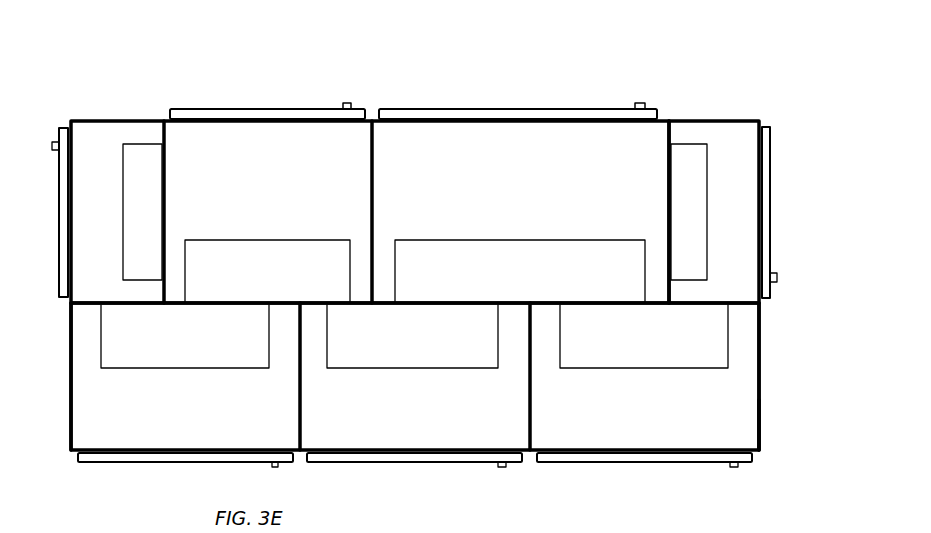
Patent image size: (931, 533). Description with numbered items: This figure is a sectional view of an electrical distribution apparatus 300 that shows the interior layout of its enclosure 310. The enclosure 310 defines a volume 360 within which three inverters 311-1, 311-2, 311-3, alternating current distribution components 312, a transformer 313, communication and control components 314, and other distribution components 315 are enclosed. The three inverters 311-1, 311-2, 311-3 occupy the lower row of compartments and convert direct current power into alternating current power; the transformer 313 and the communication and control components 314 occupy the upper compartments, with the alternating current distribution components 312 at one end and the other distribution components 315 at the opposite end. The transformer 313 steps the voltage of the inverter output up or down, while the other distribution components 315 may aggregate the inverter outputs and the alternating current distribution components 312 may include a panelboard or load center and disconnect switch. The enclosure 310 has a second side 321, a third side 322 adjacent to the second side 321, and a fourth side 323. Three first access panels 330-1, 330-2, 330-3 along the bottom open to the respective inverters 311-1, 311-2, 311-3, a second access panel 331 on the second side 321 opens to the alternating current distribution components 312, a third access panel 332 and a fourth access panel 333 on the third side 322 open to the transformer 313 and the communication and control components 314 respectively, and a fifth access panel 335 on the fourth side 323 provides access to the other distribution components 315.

The electrical distribution apparatus 300 is at (82, 90).
The enclosure 310 is at (713, 110).
The inverter 311-1 is at (193, 368).
The inverter 311-2 is at (417, 368).
The inverter 311-3 is at (612, 368).
The alternating current distribution components 312 is at (707, 212).
The transformer 313 is at (480, 240).
The communication and control components 314 is at (263, 240).
The other distribution components 315 is at (123, 228).
The second side 321 is at (760, 368).
The third side 322 is at (675, 120).
The fourth side 323 is at (70, 363).
The first access panel 330-1 is at (203, 463).
The first access panel 330-2 is at (435, 463).
The first access panel 330-3 is at (645, 463).
The second access panel 331 is at (768, 182).
The third access panel 332 is at (515, 109).
The fourth access panel 333 is at (222, 110).
The fifth access panel 335 is at (60, 217).
The volume 360 is at (747, 427).